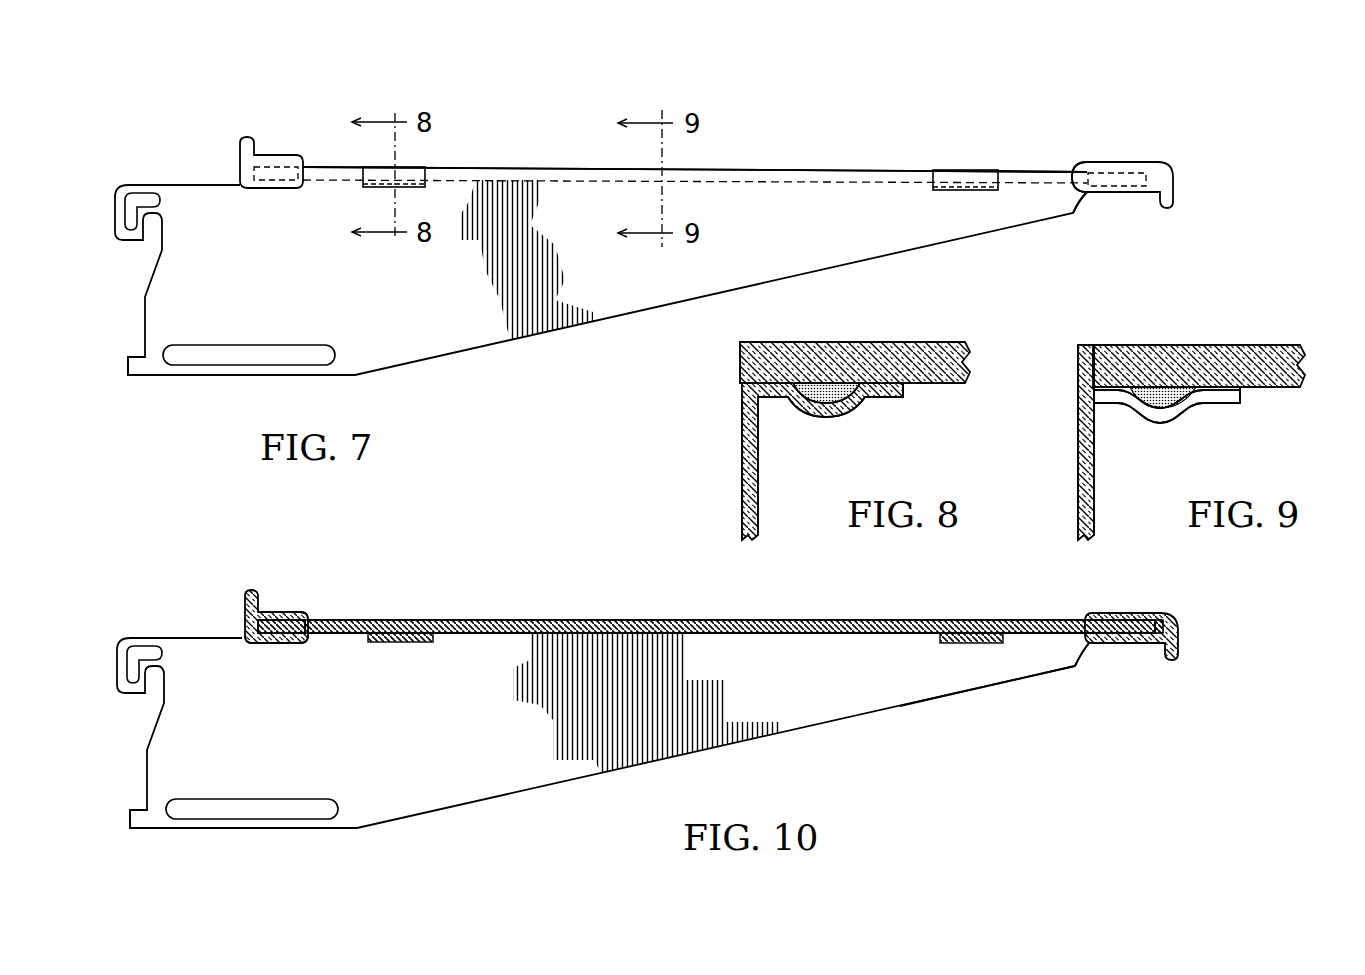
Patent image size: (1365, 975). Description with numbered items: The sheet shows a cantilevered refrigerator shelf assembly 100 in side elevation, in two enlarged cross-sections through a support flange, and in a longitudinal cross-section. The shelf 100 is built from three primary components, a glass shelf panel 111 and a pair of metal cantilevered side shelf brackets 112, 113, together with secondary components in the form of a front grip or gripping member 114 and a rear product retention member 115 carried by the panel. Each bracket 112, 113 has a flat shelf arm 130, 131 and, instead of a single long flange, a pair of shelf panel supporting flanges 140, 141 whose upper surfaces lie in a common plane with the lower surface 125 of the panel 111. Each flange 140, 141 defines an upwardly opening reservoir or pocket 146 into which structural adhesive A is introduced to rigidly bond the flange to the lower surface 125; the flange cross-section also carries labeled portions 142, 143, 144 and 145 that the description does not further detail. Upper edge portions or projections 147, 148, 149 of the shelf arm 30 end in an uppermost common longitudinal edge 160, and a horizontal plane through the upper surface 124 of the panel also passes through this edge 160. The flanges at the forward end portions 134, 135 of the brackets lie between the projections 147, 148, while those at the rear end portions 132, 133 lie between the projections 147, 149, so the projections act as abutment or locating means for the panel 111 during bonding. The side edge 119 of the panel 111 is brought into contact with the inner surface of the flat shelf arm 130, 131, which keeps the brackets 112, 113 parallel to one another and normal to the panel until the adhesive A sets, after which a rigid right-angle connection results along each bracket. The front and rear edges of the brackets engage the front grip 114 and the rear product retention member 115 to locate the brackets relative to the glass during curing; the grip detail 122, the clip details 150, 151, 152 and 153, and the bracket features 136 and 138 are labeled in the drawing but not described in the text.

In FIG. 7, the shelf arm 30 is at (613, 279).
In FIG. 7, the shelf assembly 100 is at (595, 360).
In FIG. 9, the shelf assembly 100 is at (1271, 239).
In FIG. 10, the shelf assembly 100 is at (570, 575).
In FIG. 8, the shelf panel 111 is at (919, 339).
In FIG. 9, the shelf panel 111 is at (1260, 342).
In FIG. 10, the shelf panel 111 is at (651, 614).
In FIG. 7, the shelf bracket 112 is at (655, 305).
In FIG. 8, the shelf bracket 112 is at (735, 462).
In FIG. 9, the shelf bracket 112 is at (1072, 489).
In FIG. 10, the shelf bracket 113 is at (469, 810).
In FIG. 7, the front grip 114 is at (1153, 158).
In FIG. 10, the front grip 114 is at (1180, 615).
In FIG. 7, the rear product retention member 115 is at (256, 130).
In FIG. 10, the rear product retention member 115 is at (261, 583).
In FIG. 7, the side edge 119 is at (410, 172).
In FIG. 8, the side edge 119 is at (740, 360).
In FIG. 9, the side edge 119 is at (1078, 373).
In FIG. 7, the clip pocket 122 is at (1160, 168).
In FIG. 9, the upper surface 124 is at (1287, 345).
In FIG. 10, the upper surface 124 is at (748, 617).
In FIG. 8, the lower surface 125 is at (943, 385).
In FIG. 9, the lower surface 125 is at (1298, 387).
In FIG. 10, the lower surface 125 is at (788, 640).
In FIG. 8, the flat shelf arm 130 is at (748, 493).
In FIG. 9, the flat shelf arm 130 is at (1088, 507).
In FIG. 10, the flat shelf arm 131 is at (777, 714).
In FIG. 7, the bracket web 132 is at (200, 296).
In FIG. 10, the bracket web 133 is at (233, 740).
In FIG. 7, the forward end portion 134 is at (1035, 216).
In FIG. 10, the forward end portion 135 is at (1020, 675).
In FIG. 7, the hook 136 is at (128, 195).
In FIG. 10, the hook 136 is at (125, 647).
In FIG. 7, the bottom notch 138 is at (127, 373).
In FIG. 10, the bottom notch 138 is at (138, 823).
In FIG. 7, the shelf panel supporting flange 140 is at (370, 197).
In FIG. 8, the shelf panel supporting flange 140 is at (827, 455).
In FIG. 9, the shelf panel supporting flange 140 is at (1189, 429).
In FIG. 10, the shelf panel supporting flange 141 is at (397, 656).
In FIG. 8, the flange first segment 142 is at (780, 400).
In FIG. 9, the flange first segment 142 is at (1110, 405).
In FIG. 8, the flange second segment 143 is at (888, 397).
In FIG. 9, the flange second segment 143 is at (1227, 403).
In FIG. 9, the flange end step 144 is at (1242, 397).
In FIG. 8, the flange recess 145 is at (837, 410).
In FIG. 9, the flange recess 145 is at (1163, 424).
In FIG. 8, the pocket 146 is at (812, 397).
In FIG. 9, the pocket 146 is at (1150, 393).
In FIG. 7, the upper projection 147 is at (528, 172).
In FIG. 9, the upper projection 147 is at (1077, 360).
In FIG. 10, the upper projection 147 is at (522, 617).
In FIG. 7, the upper projection 148 is at (1072, 173).
In FIG. 10, the upper projection 148 is at (1023, 620).
In FIG. 7, the upper projection 149 is at (313, 180).
In FIG. 10, the upper projection 149 is at (348, 622).
In FIG. 7, the bracket-clip junction 150 is at (1087, 195).
In FIG. 10, the bracket-clip junction 150 is at (1090, 645).
In FIG. 10, the clip bottom wall 151 is at (307, 647).
In FIG. 7, the clip pocket 152 is at (1050, 178).
In FIG. 10, the clip pocket 152 is at (1072, 625).
In FIG. 10, the clip top wall 153 is at (330, 622).
In FIG. 7, the common longitudinal edge 160 is at (330, 167).
In FIG. 9, the common longitudinal edge 160 is at (1085, 342).
In FIG. 8, the structural adhesive A is at (830, 393).
In FIG. 9, the structural adhesive A is at (1173, 390).